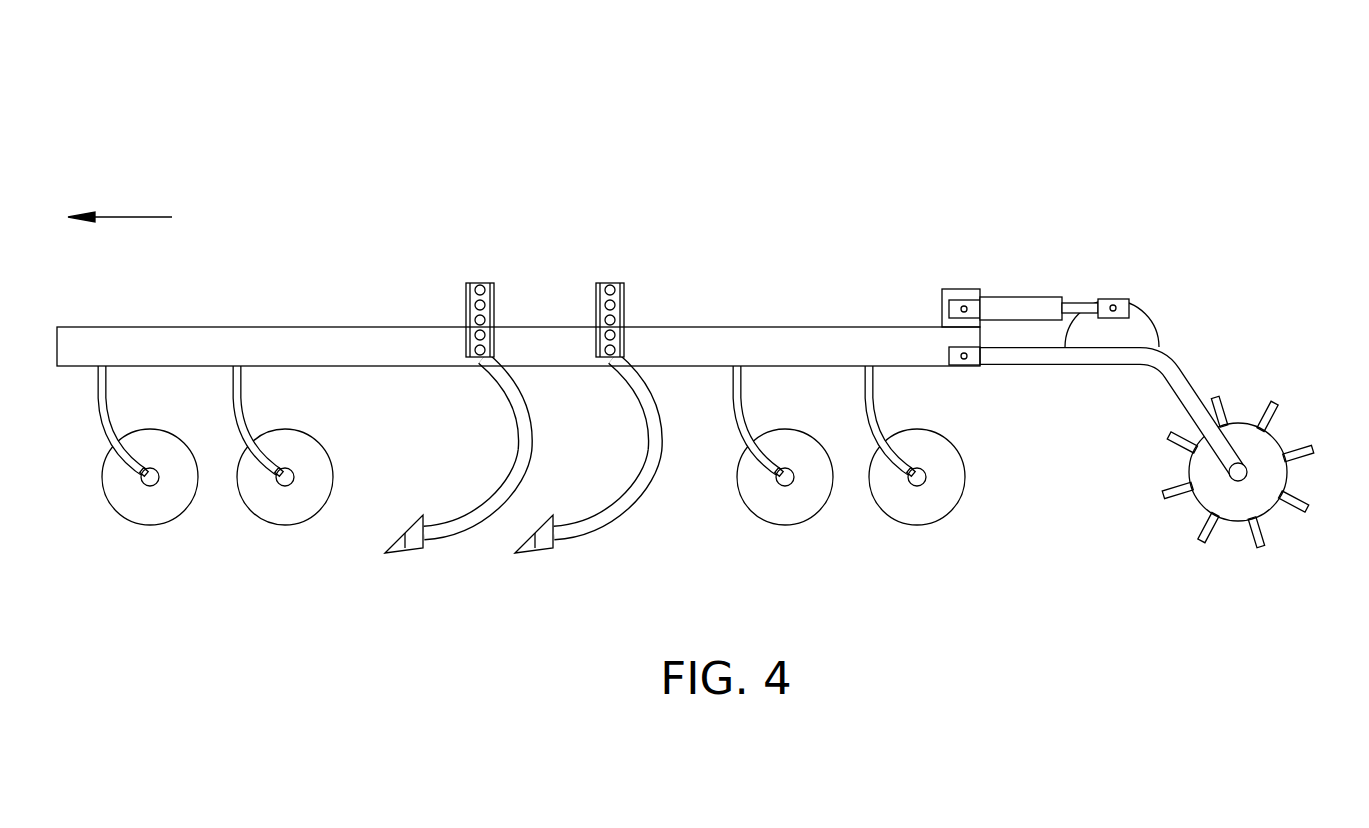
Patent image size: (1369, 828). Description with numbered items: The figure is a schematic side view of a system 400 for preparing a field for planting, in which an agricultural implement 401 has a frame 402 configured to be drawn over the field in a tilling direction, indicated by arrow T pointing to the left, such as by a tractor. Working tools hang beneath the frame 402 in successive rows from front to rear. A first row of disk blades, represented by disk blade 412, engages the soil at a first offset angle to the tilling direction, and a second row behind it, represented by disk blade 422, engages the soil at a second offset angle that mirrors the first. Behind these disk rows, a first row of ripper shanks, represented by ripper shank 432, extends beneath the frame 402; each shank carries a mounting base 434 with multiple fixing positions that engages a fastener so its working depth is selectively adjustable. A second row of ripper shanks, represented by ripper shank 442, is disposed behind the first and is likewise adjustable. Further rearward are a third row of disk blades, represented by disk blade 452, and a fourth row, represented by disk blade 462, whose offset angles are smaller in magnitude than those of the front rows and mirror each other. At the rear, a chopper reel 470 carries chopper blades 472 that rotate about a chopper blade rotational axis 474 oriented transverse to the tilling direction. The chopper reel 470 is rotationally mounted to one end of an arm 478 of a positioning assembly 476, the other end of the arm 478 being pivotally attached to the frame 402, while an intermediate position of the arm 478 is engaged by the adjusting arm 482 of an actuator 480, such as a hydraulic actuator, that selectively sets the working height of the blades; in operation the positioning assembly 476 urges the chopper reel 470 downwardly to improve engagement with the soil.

The system 400 is at (1181, 98).
The agricultural implement 401 is at (1053, 193).
The frame 402 is at (798, 335).
The disk blade 412 is at (153, 512).
The disk blade 422 is at (285, 512).
The ripper shank 432 is at (465, 525).
The mounting base 434 is at (512, 293).
The ripper shank 442 is at (605, 525).
The disk blade 452 is at (790, 512).
The disk blade 462 is at (918, 512).
The chopper reel 470 is at (1163, 449).
The chopper blade 472 is at (1268, 543).
The chopper blade rotational axis 474 is at (1230, 480).
The positioning assembly 476 is at (1163, 415).
The arm 478 is at (1172, 357).
The actuator 480 is at (1003, 268).
The adjusting arm 482 is at (1073, 305).